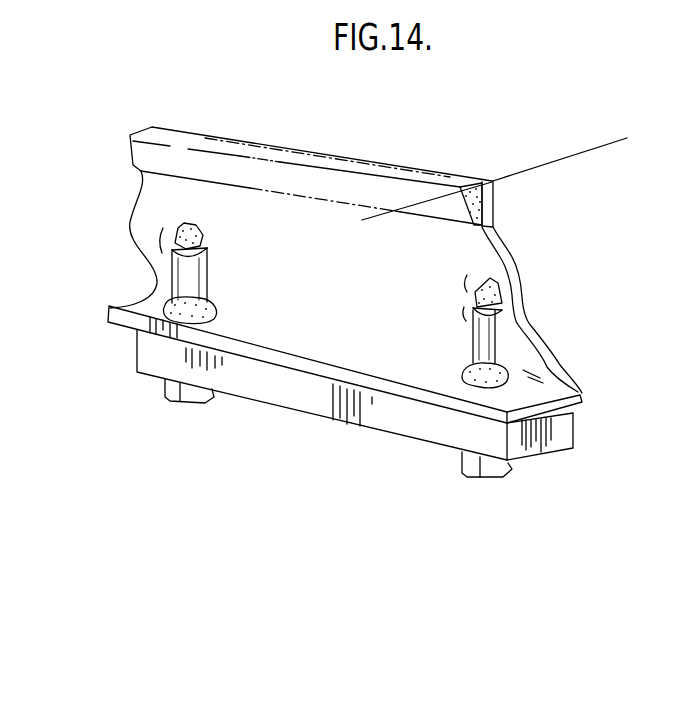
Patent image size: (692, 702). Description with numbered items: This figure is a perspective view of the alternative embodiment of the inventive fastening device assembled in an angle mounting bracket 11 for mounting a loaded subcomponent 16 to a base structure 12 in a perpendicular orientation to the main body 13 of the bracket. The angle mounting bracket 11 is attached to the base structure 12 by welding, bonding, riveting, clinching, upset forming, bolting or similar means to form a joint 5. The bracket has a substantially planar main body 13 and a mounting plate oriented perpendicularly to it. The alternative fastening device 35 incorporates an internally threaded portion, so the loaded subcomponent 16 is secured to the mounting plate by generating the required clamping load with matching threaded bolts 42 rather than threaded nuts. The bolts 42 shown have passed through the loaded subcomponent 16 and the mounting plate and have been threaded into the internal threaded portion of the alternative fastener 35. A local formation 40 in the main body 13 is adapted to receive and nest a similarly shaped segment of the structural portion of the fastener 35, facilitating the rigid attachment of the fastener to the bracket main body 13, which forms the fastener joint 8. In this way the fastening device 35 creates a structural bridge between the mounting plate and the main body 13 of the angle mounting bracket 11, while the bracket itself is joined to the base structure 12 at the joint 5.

The joint 5 is at (124, 153).
The base structure 12 is at (571, 146).
The main body 13 is at (495, 221).
The fastener joint 8 is at (180, 227).
The local formation 40 is at (492, 279).
The alternative embodiment fastening device 35 is at (493, 325).
The angle mounting bracket 11 is at (317, 376).
The loaded subcomponent 16 is at (555, 426).
The threaded bolts 42 is at (520, 479).